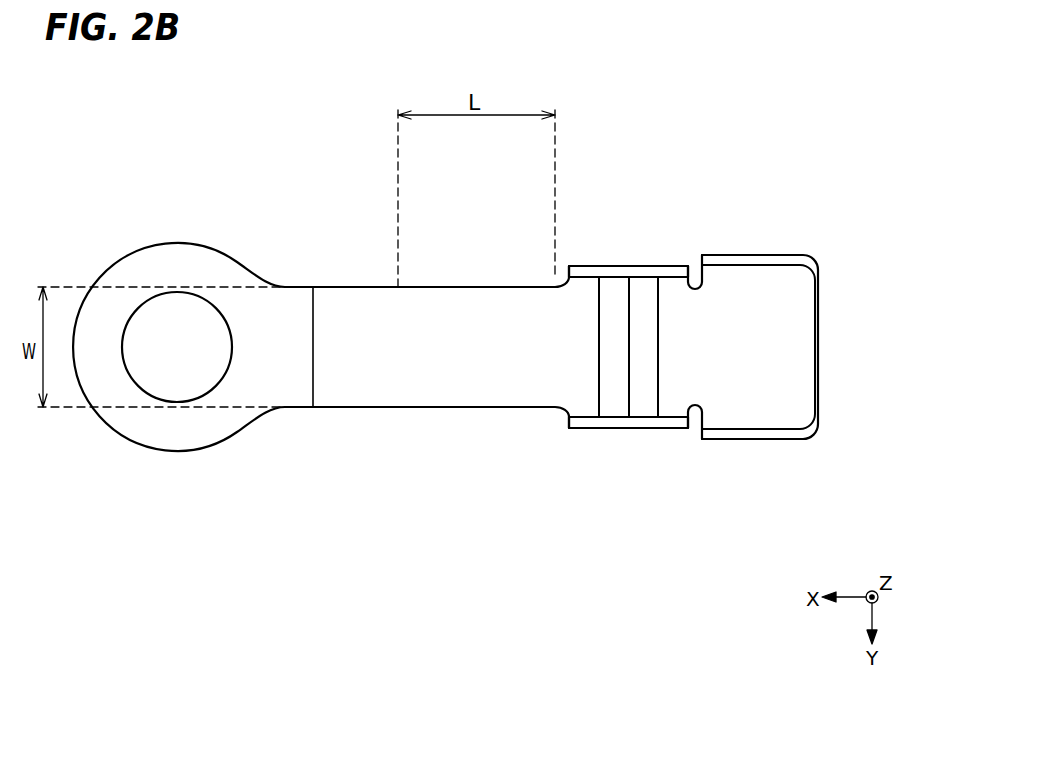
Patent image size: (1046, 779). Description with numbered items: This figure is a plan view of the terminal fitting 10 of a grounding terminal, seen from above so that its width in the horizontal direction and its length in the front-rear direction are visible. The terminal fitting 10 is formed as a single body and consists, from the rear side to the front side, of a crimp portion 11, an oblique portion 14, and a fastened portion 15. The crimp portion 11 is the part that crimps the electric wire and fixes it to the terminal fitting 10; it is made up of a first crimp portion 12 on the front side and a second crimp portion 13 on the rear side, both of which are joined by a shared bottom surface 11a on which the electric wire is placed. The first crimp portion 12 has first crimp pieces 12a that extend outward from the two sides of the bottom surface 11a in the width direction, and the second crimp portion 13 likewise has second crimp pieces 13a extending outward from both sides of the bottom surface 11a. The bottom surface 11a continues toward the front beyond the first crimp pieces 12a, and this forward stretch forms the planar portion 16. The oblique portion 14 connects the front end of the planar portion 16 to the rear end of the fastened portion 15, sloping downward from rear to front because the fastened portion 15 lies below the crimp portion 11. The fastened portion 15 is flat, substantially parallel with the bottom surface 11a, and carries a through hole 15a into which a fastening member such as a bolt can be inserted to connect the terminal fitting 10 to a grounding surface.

The terminal fitting 10 is at (836, 138).
The crimp portion 11 is at (761, 181).
The bottom surface 11a is at (754, 335).
The first crimp portion 12 is at (647, 265).
The first crimp pieces 12a is at (628, 272).
The second crimp portion 13 is at (750, 255).
The second crimp pieces 13a is at (780, 261).
The oblique portion 14 is at (345, 300).
The fastened portion 15 is at (190, 257).
The through hole 15a is at (185, 373).
The planar portion 16 is at (455, 300).